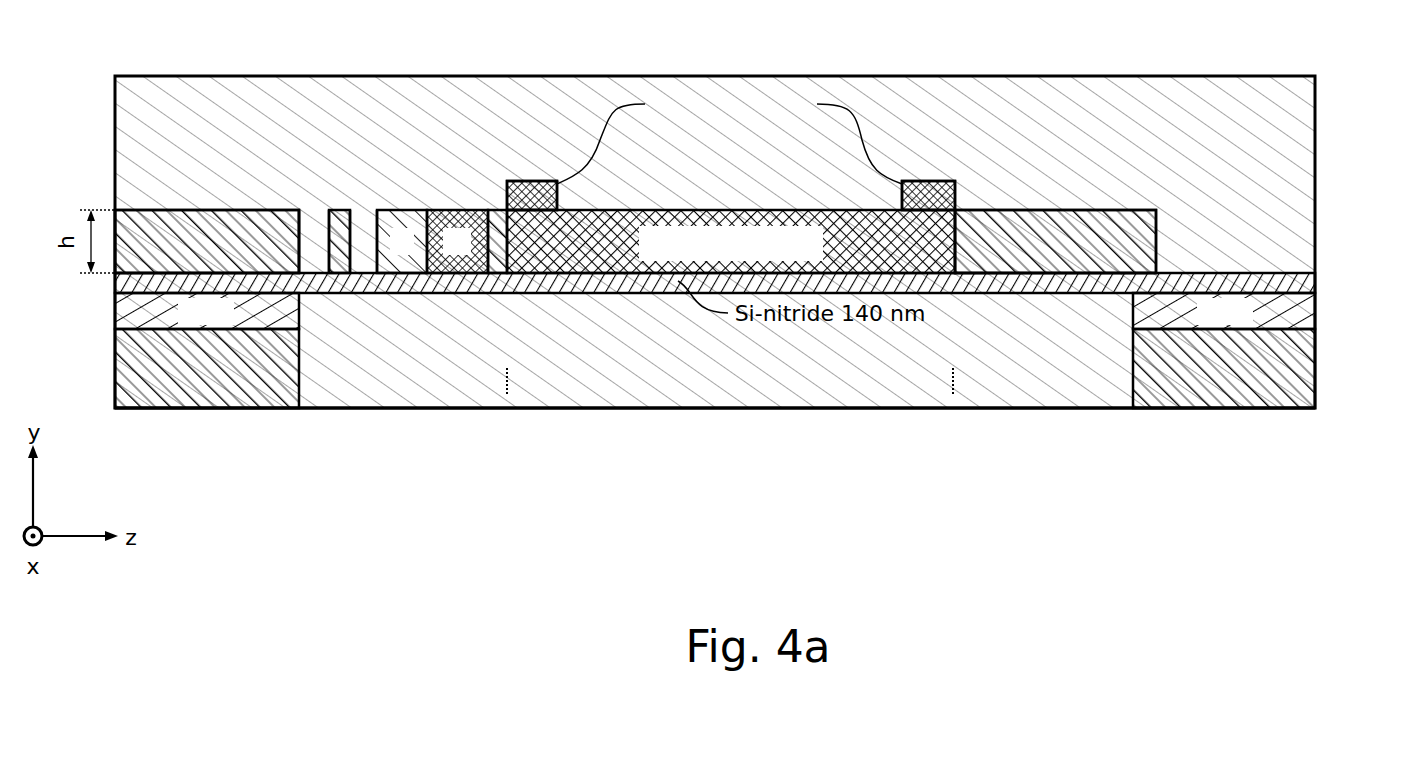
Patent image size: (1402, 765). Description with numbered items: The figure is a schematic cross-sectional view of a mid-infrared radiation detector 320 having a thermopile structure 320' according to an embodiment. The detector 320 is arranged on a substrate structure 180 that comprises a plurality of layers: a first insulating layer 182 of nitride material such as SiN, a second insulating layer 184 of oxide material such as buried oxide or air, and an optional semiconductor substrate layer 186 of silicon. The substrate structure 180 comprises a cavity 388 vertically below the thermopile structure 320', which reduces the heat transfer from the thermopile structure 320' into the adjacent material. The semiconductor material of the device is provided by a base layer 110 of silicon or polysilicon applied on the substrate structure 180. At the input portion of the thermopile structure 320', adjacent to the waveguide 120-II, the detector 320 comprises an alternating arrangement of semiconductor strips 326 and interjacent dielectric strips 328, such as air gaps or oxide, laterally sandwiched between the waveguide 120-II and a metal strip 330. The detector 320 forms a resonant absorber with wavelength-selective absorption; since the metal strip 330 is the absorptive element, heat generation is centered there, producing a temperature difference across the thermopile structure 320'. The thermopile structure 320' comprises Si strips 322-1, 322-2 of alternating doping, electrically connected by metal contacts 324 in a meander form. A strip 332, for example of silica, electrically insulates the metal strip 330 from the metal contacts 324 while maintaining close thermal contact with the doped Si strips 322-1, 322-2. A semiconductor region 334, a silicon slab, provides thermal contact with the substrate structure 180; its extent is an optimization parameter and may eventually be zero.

The mid-infrared radiation detector 320 is at (715, 219).
The thermopile structure 320' is at (730, 342).
The base layer 110 is at (132, 218).
The multi-strip waveguide structure 120-II is at (145, 200).
The semiconductor strip 326 is at (341, 210).
The dielectric strip 328 is at (310, 207).
The metal strip 330 is at (458, 210).
The strip 332 is at (500, 198).
The metal contact 324 is at (557, 197).
The Si strip 322-1 is at (673, 166).
The Si strip 322-2 is at (876, 209).
The semiconductor region 334 is at (1050, 210).
The substrate structure 180 is at (701, 340).
The first insulating layer 182 is at (115, 283).
The second insulating layer 184 is at (115, 312).
The semiconductor substrate layer 186 is at (115, 370).
The cavity 388 is at (1024, 410).